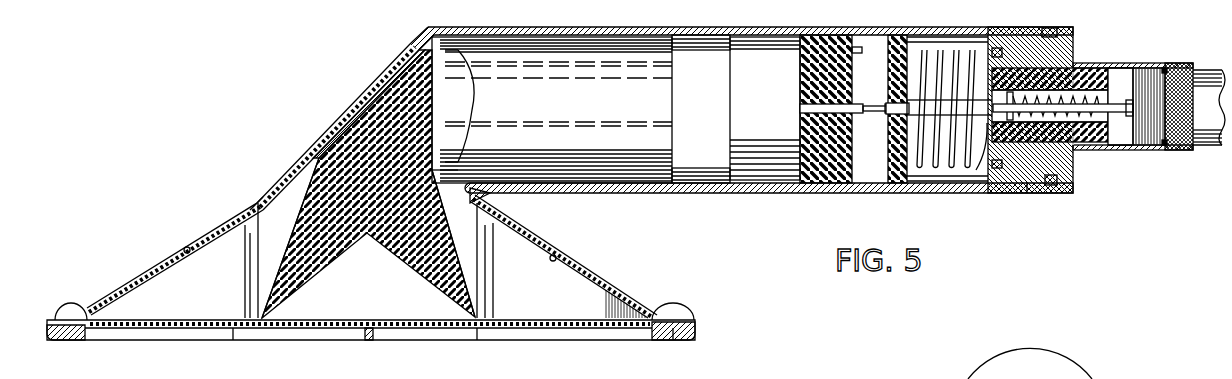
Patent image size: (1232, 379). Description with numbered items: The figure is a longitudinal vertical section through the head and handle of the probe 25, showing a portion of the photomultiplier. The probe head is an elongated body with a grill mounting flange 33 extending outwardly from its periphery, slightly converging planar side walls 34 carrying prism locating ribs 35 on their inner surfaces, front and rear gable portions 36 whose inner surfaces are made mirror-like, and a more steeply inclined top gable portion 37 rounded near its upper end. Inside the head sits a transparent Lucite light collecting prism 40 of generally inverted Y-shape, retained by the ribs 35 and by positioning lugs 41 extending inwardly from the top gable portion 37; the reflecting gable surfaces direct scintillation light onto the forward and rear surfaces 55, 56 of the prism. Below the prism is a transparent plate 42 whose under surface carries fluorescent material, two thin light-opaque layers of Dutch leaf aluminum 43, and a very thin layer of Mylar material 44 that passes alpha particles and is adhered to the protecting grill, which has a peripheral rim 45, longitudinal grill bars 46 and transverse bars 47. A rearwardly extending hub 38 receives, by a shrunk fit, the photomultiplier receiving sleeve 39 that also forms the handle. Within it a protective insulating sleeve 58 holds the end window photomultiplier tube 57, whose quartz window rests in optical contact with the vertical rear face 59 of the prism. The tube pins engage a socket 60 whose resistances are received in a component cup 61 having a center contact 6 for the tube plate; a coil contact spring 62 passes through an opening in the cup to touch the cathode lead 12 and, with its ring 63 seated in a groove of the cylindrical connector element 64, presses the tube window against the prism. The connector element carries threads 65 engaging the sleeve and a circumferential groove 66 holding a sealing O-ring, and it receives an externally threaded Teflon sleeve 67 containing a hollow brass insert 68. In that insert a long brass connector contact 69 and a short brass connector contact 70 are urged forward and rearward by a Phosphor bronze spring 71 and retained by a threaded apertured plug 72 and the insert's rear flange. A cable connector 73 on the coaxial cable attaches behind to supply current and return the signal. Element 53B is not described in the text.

The probe 25 is at (420, 13).
The rearwardly extending hub 38 is at (512, 25).
The top gable portion 37 is at (322, 137).
The side walls 34 is at (285, 192).
The front and rear gable portions 36 is at (172, 255).
The weld 53B is at (188, 248).
The positioning lugs 41 is at (418, 47).
The light collecting prism 40 is at (343, 247).
The forward surface of prism 55 is at (290, 242).
The rear surface of prism 56 is at (442, 230).
The rear face of prism 59 is at (433, 170).
The prism locating ribs 35 is at (249, 253).
The transparent plate 42 is at (213, 318).
The thin layers of material 43 is at (540, 318).
The grill mounting flange 33 is at (687, 305).
The layer of Mylar material 44 is at (233, 342).
The transverse bars 47 is at (362, 341).
The longitudinal grill bars 46 is at (477, 330).
The peripheral rim 45 is at (673, 341).
The protective insulating sleeve 58 is at (568, 57).
The photomultiplier tube 57 is at (462, 83).
The photomultiplier receiving sleeve 39 is at (635, 27).
The socket 60 is at (823, 173).
The cathode lead 12 is at (886, 60).
The center contact 6 is at (878, 107).
The long brass connector contact 69 is at (890, 117).
The component cup 61 is at (898, 173).
The coil contact spring 62 is at (942, 60).
The threaded apertured plug 72 is at (983, 123).
The ring 63 is at (1000, 48).
The connector element 64 is at (1075, 163).
The circumferential groove 66 is at (1058, 187).
The threads 65 is at (1027, 183).
The Teflon sleeve 67 is at (1082, 83).
The brass insert 68 is at (1108, 97).
The short brass connector contact 70 is at (1118, 110).
The Phosphor bronze spring 71 is at (1092, 143).
The cable connector 73 is at (1183, 63).